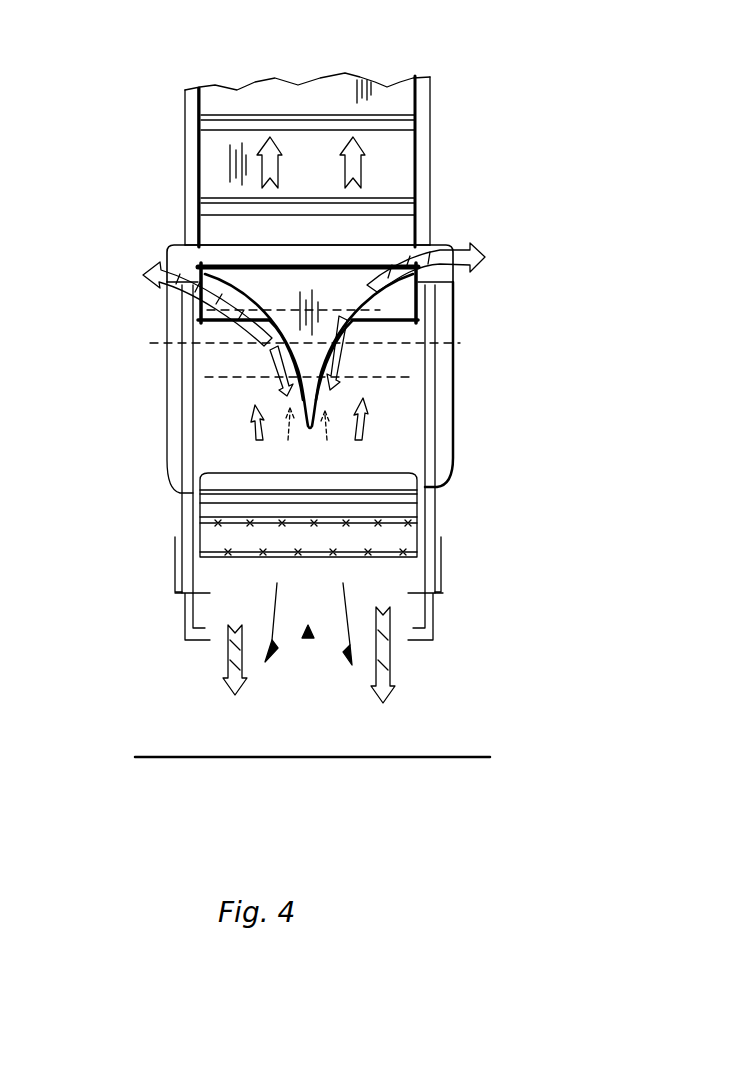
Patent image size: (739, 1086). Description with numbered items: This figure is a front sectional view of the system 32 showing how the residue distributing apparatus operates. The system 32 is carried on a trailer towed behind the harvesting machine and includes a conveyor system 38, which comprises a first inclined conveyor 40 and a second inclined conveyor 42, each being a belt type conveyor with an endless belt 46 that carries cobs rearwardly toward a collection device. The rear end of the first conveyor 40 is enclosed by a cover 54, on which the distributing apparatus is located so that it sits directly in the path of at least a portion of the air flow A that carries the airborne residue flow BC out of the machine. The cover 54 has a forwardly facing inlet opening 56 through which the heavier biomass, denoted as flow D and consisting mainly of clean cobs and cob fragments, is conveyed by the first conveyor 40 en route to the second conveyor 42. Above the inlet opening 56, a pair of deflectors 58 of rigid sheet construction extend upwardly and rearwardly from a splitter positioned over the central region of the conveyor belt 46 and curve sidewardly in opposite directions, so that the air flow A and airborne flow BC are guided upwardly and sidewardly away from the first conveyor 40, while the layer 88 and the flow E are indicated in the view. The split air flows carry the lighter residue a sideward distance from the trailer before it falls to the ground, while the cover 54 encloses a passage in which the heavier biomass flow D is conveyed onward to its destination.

The system 32 is at (567, 110).
The conveyor system 38 is at (432, 98).
The second inclined conveyor 42 is at (185, 122).
The endless belt 46 is at (392, 208).
The first inclined conveyor 40 is at (309, 462).
The cover 54 is at (218, 410).
The inlet opening 56 is at (240, 483).
The deflectors 58 is at (250, 287).
The air layer 88 is at (380, 350).
The air flow A is at (242, 363).
The airborne residue flow BC is at (150, 268).
The heavier biomass flow D is at (342, 170).
The exhaust flow E is at (277, 603).